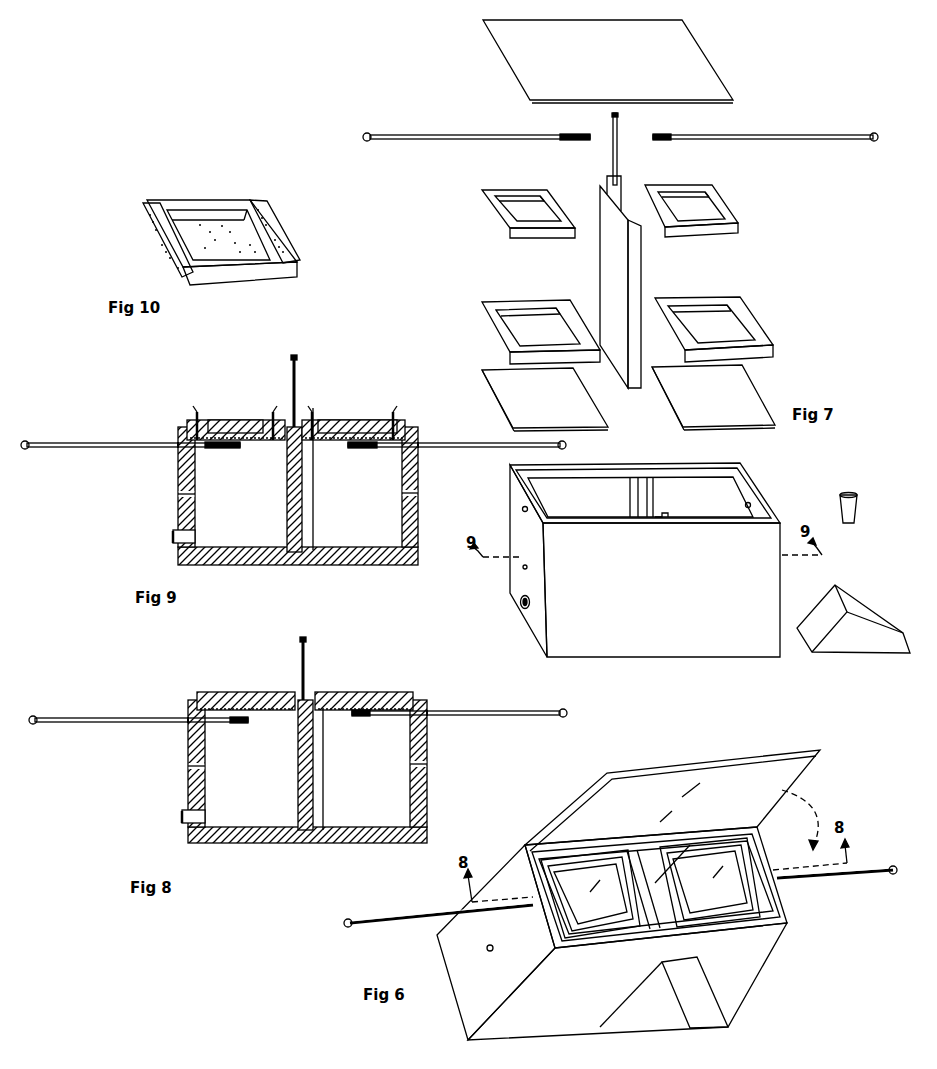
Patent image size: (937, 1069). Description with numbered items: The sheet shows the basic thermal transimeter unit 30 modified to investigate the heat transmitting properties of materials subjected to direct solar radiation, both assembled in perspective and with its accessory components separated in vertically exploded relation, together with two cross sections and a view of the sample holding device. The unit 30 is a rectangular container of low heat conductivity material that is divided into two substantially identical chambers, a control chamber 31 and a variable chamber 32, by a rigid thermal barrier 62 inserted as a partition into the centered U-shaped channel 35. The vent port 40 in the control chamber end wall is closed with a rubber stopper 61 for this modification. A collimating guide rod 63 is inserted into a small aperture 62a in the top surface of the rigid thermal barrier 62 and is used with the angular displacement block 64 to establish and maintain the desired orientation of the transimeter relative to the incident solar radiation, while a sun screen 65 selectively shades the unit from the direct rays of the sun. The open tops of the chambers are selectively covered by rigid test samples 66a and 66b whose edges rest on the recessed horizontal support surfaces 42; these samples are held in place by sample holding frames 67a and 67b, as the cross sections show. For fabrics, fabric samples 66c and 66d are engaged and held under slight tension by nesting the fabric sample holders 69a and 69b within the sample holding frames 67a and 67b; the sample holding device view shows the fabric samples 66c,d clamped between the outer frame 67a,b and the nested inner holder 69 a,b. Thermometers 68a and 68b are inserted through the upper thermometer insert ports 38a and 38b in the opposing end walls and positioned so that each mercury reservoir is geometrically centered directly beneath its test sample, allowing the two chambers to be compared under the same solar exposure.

In FIG. 7, the basic thermal transimeter unit 30 is at (635, 665).
In FIG. 9, the basic thermal transimeter unit 30 is at (275, 569).
In FIG. 8, the basic thermal transimeter unit 30 is at (280, 850).
In FIG. 6, the basic thermal transimeter unit 30 is at (612, 933).
In FIG. 9, the control chamber 31 is at (238, 500).
In FIG. 8, the control chamber 31 is at (250, 773).
In FIG. 9, the variable chamber 32 is at (355, 497).
In FIG. 8, the variable chamber 32 is at (365, 772).
In FIG. 7, the U-shaped channel 35 is at (655, 515).
In FIG. 7, the upper thermometer insert port 38a is at (521, 508).
In FIG. 9, the upper thermometer insert port 38a is at (177, 442).
In FIG. 8, the upper thermometer insert port 38a is at (188, 713).
In FIG. 7, the upper thermometer insert port 38b is at (745, 505).
In FIG. 9, the upper thermometer insert port 38b is at (408, 443).
In FIG. 8, the upper thermometer insert port 38b is at (425, 712).
In FIG. 7, the vent port 40 is at (519, 603).
In FIG. 9, the vent port 40 is at (196, 537).
In FIG. 8, the vent port 40 is at (206, 816).
In FIG. 7, the horizontal support surface 42 is at (678, 480).
In FIG. 7, the rubber stopper 61 is at (852, 494).
In FIG. 9, the rubber stopper 61 is at (172, 541).
In FIG. 8, the rubber stopper 61 is at (177, 821).
In FIG. 7, the rigid thermal barrier 62 is at (612, 280).
In FIG. 9, the rigid thermal barrier 62 is at (308, 497).
In FIG. 8, the rigid thermal barrier 62 is at (317, 780).
In FIG. 7, the small aperture 62a is at (618, 204).
In FIG. 7, the collimating guide rod 63 is at (623, 143).
In FIG. 9, the collimating guide rod 63 is at (300, 367).
In FIG. 8, the collimating guide rod 63 is at (300, 648).
In FIG. 7, the angular displacement block 64 is at (863, 613).
In FIG. 6, the angular displacement block 64 is at (664, 992).
In FIG. 7, the sun screen 65 is at (680, 66).
In FIG. 6, the sun screen 65 is at (672, 800).
In FIG. 7, the rigid test sample 66a is at (482, 378).
In FIG. 8, the rigid test sample 66a is at (260, 714).
In FIG. 7, the rigid test sample 66b is at (755, 391).
In FIG. 8, the rigid test sample 66b is at (345, 714).
In FIG. 9, the fabric sample 66c is at (197, 410).
In FIG. 9, the fabric sample 66d is at (393, 410).
In FIG. 10, the fabric samples 66c,d is at (163, 238).
In FIG. 7, the sample holding frame 67a is at (485, 327).
In FIG. 9, the sample holding frame 67a is at (185, 418).
In FIG. 8, the sample holding frame 67a is at (240, 690).
In FIG. 7, the sample holding frame 67b is at (763, 323).
In FIG. 9, the sample holding frame 67b is at (403, 417).
In FIG. 8, the sample holding frame 67b is at (363, 690).
In FIG. 10, the sample holding frames 67a,b is at (233, 276).
In FIG. 7, the thermometer 68a is at (477, 130).
In FIG. 9, the thermometer 68a is at (92, 442).
In FIG. 7, the thermometer 68b is at (772, 135).
In FIG. 9, the thermometer 68b is at (472, 443).
In FIG. 8, the thermometer 68b is at (85, 717).
In FIG. 7, the fabric sample holder 69a is at (480, 210).
In FIG. 9, the fabric sample holder 69a is at (237, 418).
In FIG. 7, the fabric sample holder 69b is at (727, 200).
In FIG. 9, the fabric sample holder 69b is at (352, 417).
In FIG. 10, the fabric sample holders 69 a,b is at (207, 215).